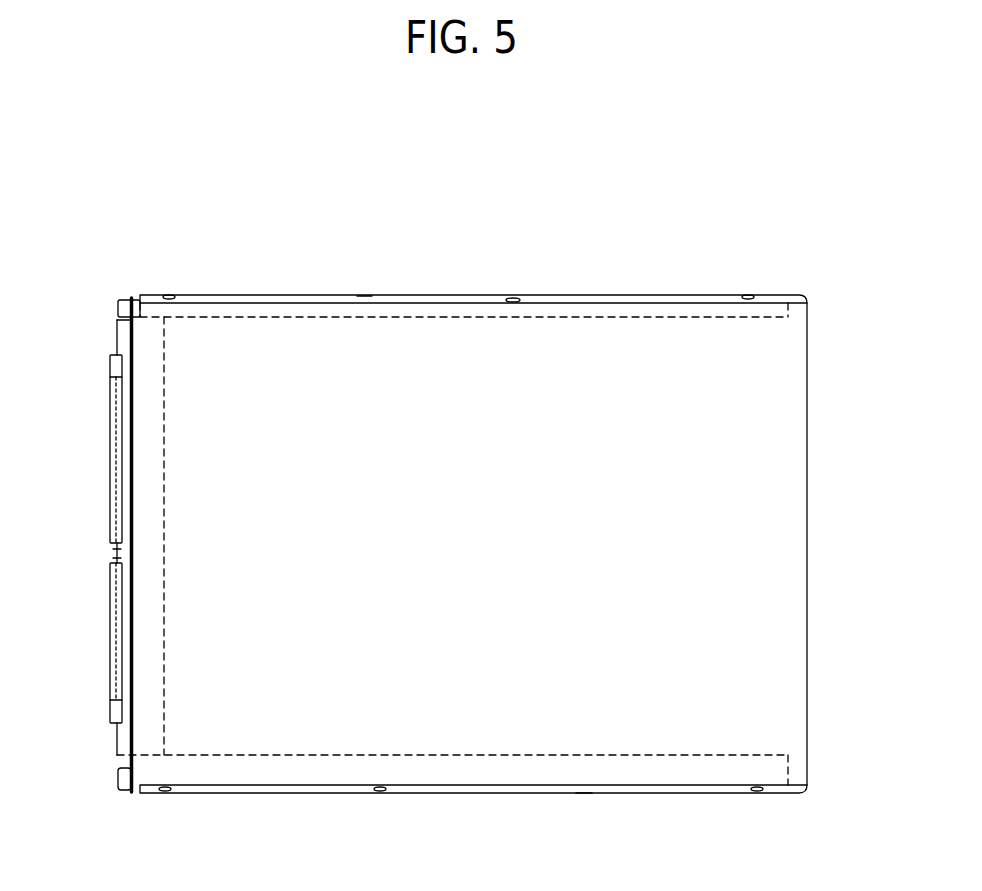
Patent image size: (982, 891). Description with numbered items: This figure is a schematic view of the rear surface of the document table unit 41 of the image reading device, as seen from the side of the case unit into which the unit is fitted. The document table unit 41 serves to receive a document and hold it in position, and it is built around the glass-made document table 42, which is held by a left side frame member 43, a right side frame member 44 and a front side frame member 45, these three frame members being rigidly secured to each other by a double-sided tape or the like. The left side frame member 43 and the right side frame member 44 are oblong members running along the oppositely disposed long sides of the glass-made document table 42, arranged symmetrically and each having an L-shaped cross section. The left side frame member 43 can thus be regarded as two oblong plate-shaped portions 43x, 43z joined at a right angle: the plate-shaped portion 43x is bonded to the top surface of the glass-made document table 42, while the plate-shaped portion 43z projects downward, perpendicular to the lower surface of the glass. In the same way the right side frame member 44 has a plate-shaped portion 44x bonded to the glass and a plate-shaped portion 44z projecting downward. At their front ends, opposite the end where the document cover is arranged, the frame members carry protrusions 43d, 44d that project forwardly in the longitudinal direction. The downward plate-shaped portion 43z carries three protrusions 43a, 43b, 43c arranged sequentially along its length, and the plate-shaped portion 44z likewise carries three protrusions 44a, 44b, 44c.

The document table unit 41 is at (120, 284).
The glass-made document table 42 is at (622, 348).
The left side frame member 43 is at (790, 793).
The protrusion 43a is at (165, 795).
The protrusion 43b is at (380, 795).
The protrusion 43c is at (757, 795).
The protrusion 43d is at (118, 780).
The plate-shaped portion 43x is at (778, 773).
The plate-shaped portion 43z is at (584, 797).
The right side frame member 44 is at (791, 299).
The protrusion 44a is at (170, 296).
The protrusion 44b is at (513, 298).
The protrusion 44c is at (748, 296).
The protrusion 44d is at (118, 308).
The plate-shaped portion 44x is at (790, 316).
The plate-shaped portion 44z is at (366, 296).
The front side frame member 45 is at (117, 552).